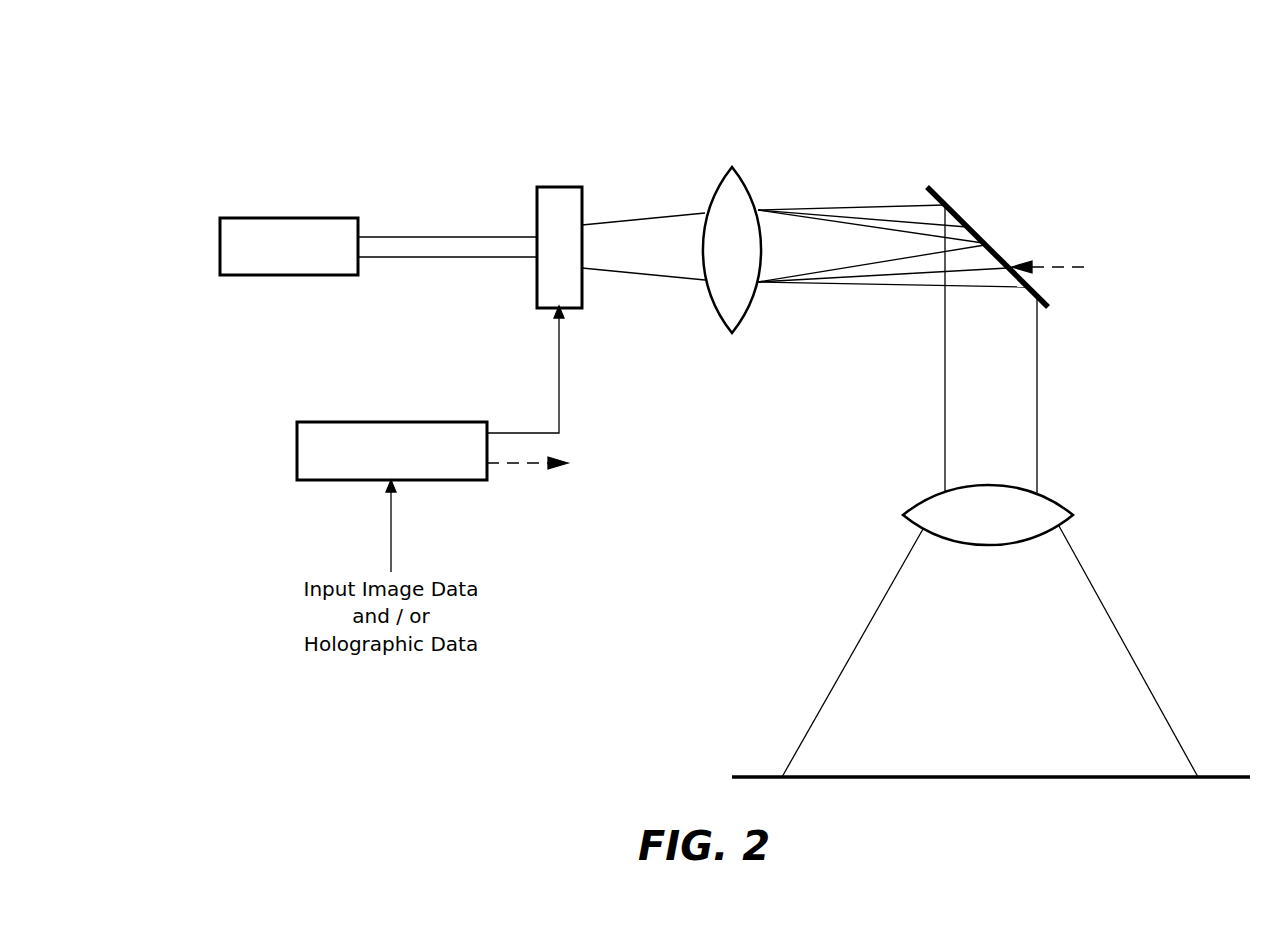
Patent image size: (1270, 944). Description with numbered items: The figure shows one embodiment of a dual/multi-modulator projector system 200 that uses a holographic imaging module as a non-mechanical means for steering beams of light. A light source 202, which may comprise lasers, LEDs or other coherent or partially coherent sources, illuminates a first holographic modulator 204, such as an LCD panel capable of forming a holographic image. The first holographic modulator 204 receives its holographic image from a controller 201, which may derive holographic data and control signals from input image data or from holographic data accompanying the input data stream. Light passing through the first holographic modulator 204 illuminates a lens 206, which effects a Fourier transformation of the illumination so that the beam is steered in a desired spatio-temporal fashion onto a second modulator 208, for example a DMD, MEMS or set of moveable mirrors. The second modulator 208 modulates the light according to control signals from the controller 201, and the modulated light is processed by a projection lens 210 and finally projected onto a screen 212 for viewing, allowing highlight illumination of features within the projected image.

The projector system 200 is at (822, 78).
The controller 201 is at (367, 422).
The light source 202 is at (290, 218).
The first holographic modulator 204 is at (563, 187).
The lens 206 is at (740, 176).
The second modulator 208 is at (945, 198).
The projection lens 210 is at (912, 522).
The screen 212 is at (767, 775).